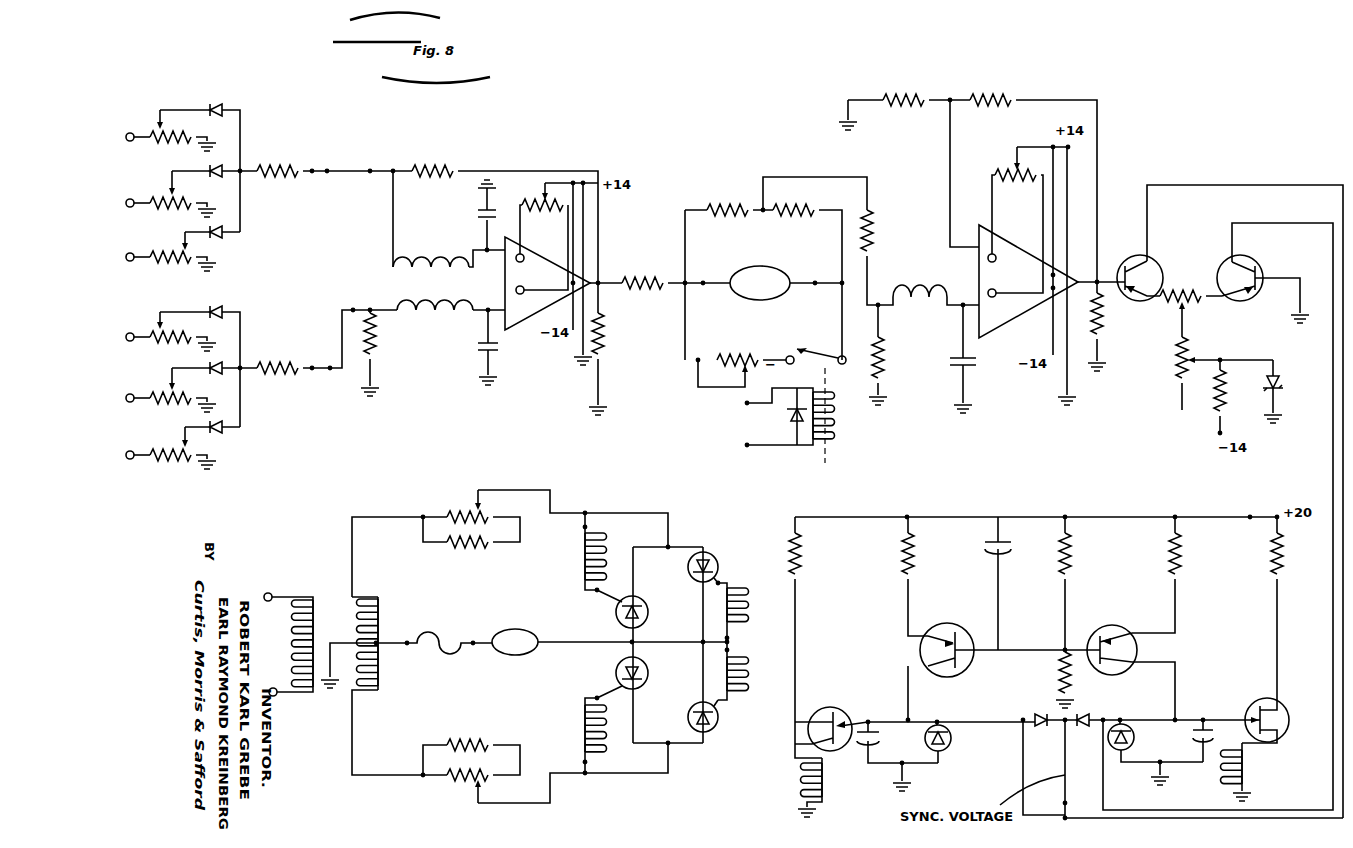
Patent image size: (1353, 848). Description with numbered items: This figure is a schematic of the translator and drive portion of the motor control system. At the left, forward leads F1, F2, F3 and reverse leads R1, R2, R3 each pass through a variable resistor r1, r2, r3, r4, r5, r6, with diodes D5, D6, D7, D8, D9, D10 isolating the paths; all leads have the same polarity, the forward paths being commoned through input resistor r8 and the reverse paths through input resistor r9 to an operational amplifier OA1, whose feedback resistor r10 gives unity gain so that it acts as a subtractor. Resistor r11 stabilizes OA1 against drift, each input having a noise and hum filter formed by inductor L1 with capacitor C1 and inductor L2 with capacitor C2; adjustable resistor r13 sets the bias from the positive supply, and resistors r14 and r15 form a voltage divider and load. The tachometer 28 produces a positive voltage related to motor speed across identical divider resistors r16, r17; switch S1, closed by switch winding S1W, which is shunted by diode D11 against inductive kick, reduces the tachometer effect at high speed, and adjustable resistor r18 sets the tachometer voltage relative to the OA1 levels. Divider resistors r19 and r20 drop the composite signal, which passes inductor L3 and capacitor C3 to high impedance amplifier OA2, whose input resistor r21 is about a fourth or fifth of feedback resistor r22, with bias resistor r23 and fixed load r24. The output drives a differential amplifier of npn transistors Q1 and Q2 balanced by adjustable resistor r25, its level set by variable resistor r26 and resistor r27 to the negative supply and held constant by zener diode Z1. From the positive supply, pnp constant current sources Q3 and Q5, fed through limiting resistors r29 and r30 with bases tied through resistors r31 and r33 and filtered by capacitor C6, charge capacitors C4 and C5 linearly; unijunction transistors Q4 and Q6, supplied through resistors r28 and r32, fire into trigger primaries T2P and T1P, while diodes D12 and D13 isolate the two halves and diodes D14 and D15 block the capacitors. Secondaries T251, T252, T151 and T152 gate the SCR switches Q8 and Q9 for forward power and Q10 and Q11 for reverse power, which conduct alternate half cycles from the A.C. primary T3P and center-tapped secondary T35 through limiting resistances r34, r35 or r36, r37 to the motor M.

The forward lead F1 is at (138, 123).
The forward lead F2 is at (138, 191).
The forward lead F3 is at (138, 246).
The reverse lead R1 is at (138, 324).
The reverse lead R2 is at (138, 386).
The reverse lead R3 is at (138, 444).
The variable resistor r1 is at (183, 135).
The variable resistor r2 is at (183, 197).
The variable resistor r3 is at (183, 256).
The variable resistor r4 is at (183, 336).
The variable resistor r5 is at (183, 394).
The variable resistor r6 is at (183, 452).
The isolation diode D5 is at (216, 105).
The isolation diode D6 is at (224, 169).
The isolation diode D7 is at (223, 233).
The isolation diode D8 is at (222, 310).
The isolation diode D9 is at (224, 371).
The isolation diode D10 is at (224, 429).
The switch winding diode D11 is at (790, 421).
The isolating diode D12 is at (1036, 716).
The isolating diode D13 is at (1092, 718).
The blocking diode D14 is at (950, 748).
The blocking diode D15 is at (1132, 740).
The input resistor r8 is at (284, 168).
The input resistor r9 is at (273, 366).
The feedback resistor r10 is at (436, 152).
The stabilizing resistor r11 is at (374, 340).
The adjustable bias resistor r13 is at (544, 236).
The voltage divider resistor r14 is at (598, 342).
The load resistor r15 is at (648, 262).
The voltage divider resistor r16 is at (722, 204).
The voltage divider resistor r17 is at (794, 206).
The adjustable resistor r18 is at (726, 354).
The voltage divider resistor r19 is at (868, 234).
The voltage divider resistor r20 is at (884, 374).
The input resistor r21 is at (894, 100).
The feedback resistor r22 is at (988, 100).
The bias adjusting resistor r23 is at (1002, 172).
The fixed load resistor r24 is at (1104, 330).
The adjustable emitter resistance r25 is at (1182, 282).
The variable resistor r26 is at (1178, 364).
The resistor r27 is at (1210, 404).
The current limiting resistor r28 is at (798, 586).
The current limiting resistor r29 is at (900, 552).
The current limiting resistor r30 is at (1064, 555).
The base resistor r31 is at (1178, 550).
The current limiting resistor r32 is at (1274, 578).
The base resistor r33 is at (1058, 674).
The current limiting resistance r34 is at (444, 509).
The current limiting resistance r35 is at (480, 551).
The current limiting resistance r36 is at (452, 782).
The current limiting resistance r37 is at (468, 742).
The inductor L1 is at (449, 219).
The inductor L2 is at (435, 316).
The inductor L3 is at (920, 299).
The capacitor C1 is at (476, 214).
The capacitor C2 is at (490, 347).
The capacitor C3 is at (956, 356).
The timing capacitor C4 is at (876, 742).
The timing capacitor C5 is at (1198, 720).
The filter capacitor C6 is at (987, 543).
The first operational amplifier OA1 is at (547, 283).
The second operational amplifier OA2 is at (1028, 281).
The tachometer 28 is at (760, 266).
The switch S1 is at (816, 344).
The switch winding S1W is at (812, 415).
The zener diode Z1 is at (1290, 390).
The npn transistor Q1 is at (1123, 258).
The npn transistor Q2 is at (1256, 262).
The pnp transistor Q3 is at (942, 629).
The unijunction transistor Q4 is at (824, 711).
The pnp transistor Q5 is at (1101, 633).
The unijunction transistor Q6 is at (1253, 699).
The SCR switch Q8 is at (706, 553).
The SCR switch Q9 is at (712, 730).
The SCR switch Q10 is at (648, 676).
The SCR switch Q11 is at (640, 599).
The power transformer primary T3P is at (281, 596).
The power transformer secondary T35 is at (378, 599).
The trigger transformer secondary T251 is at (567, 552).
The trigger transformer secondary T252 is at (572, 734).
The trigger transformer secondary T151 is at (750, 611).
The trigger transformer secondary T152 is at (751, 671).
The trigger transformer primary T2P is at (829, 787).
The trigger transformer primary T1P is at (1253, 772).
The motor M is at (515, 642).